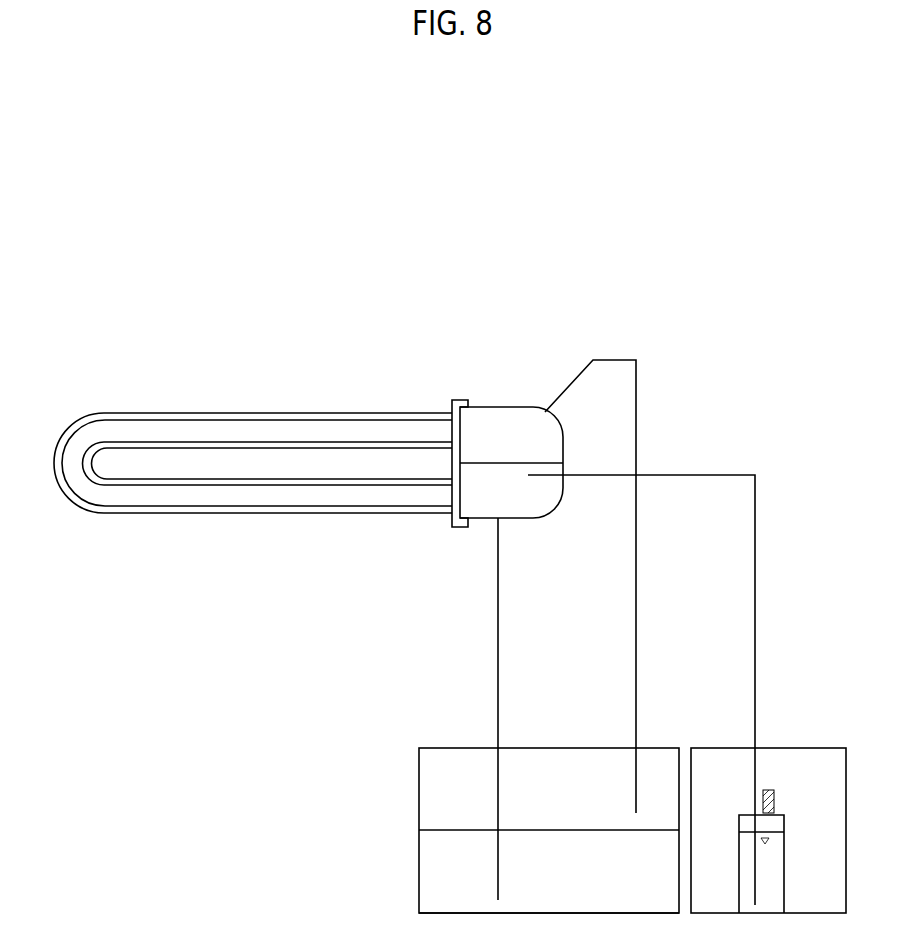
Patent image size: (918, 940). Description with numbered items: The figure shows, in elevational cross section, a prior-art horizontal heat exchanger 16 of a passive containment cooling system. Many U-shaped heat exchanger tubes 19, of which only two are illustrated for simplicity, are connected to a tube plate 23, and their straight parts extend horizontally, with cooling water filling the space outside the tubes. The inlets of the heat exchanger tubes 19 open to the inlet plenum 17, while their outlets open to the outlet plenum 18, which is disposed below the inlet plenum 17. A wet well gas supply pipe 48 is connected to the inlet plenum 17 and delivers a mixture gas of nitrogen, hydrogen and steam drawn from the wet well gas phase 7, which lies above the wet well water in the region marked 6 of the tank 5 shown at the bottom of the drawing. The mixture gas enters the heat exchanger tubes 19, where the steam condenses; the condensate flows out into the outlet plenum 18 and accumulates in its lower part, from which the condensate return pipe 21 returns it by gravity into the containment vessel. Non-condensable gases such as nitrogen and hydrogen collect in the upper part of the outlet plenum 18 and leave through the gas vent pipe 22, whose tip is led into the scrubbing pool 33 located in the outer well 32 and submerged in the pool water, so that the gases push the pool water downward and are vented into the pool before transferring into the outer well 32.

The heat exchanger 16 is at (205, 232).
The heat exchanger tubes 19 is at (192, 442).
The tube plate 23 is at (452, 400).
The inlet plenum 17 is at (515, 420).
The outlet plenum 18 is at (510, 487).
The wet well gas supply pipe 48 is at (617, 357).
The gas vent pipe 22 is at (703, 470).
The condensate return pipe 21 is at (497, 685).
The tank 5 is at (400, 812).
The wet well gas phase 7 is at (549, 803).
The lower chamber 6 is at (549, 882).
The outer well 32 is at (730, 745).
The scrubbing pool 33 is at (786, 878).